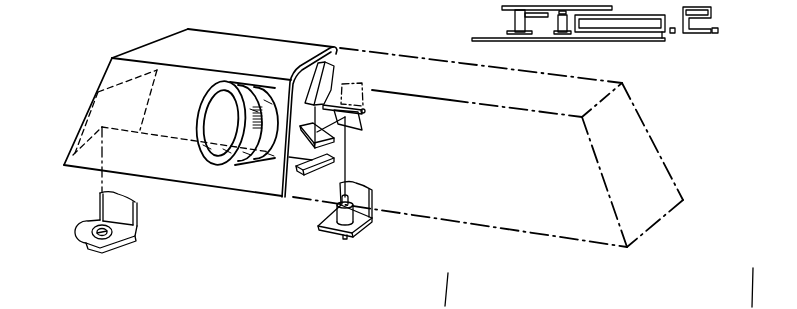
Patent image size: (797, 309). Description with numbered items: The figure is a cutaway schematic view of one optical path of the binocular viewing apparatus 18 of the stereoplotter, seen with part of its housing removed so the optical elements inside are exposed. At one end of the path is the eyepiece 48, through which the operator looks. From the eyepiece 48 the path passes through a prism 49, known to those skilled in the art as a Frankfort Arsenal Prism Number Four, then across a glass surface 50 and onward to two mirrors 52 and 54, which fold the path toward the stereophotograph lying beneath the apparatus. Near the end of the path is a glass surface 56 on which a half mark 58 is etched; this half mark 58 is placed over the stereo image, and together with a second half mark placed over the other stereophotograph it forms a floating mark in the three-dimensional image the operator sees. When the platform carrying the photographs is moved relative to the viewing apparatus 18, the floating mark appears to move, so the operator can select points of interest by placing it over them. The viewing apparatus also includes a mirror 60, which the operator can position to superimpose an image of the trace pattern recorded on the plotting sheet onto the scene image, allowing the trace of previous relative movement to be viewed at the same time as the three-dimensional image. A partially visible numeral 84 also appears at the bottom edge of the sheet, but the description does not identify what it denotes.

The binocular viewing apparatus 18 is at (337, 40).
The eyepiece 48 is at (222, 107).
The prism 49 is at (331, 67).
The glass surface 50 is at (338, 137).
The mirror 52 is at (308, 167).
The mirror 54 is at (102, 111).
The glass surface 56 is at (130, 228).
The half mark 58 is at (95, 247).
The mirror 60 is at (360, 125).
The member 84 is at (599, 288).